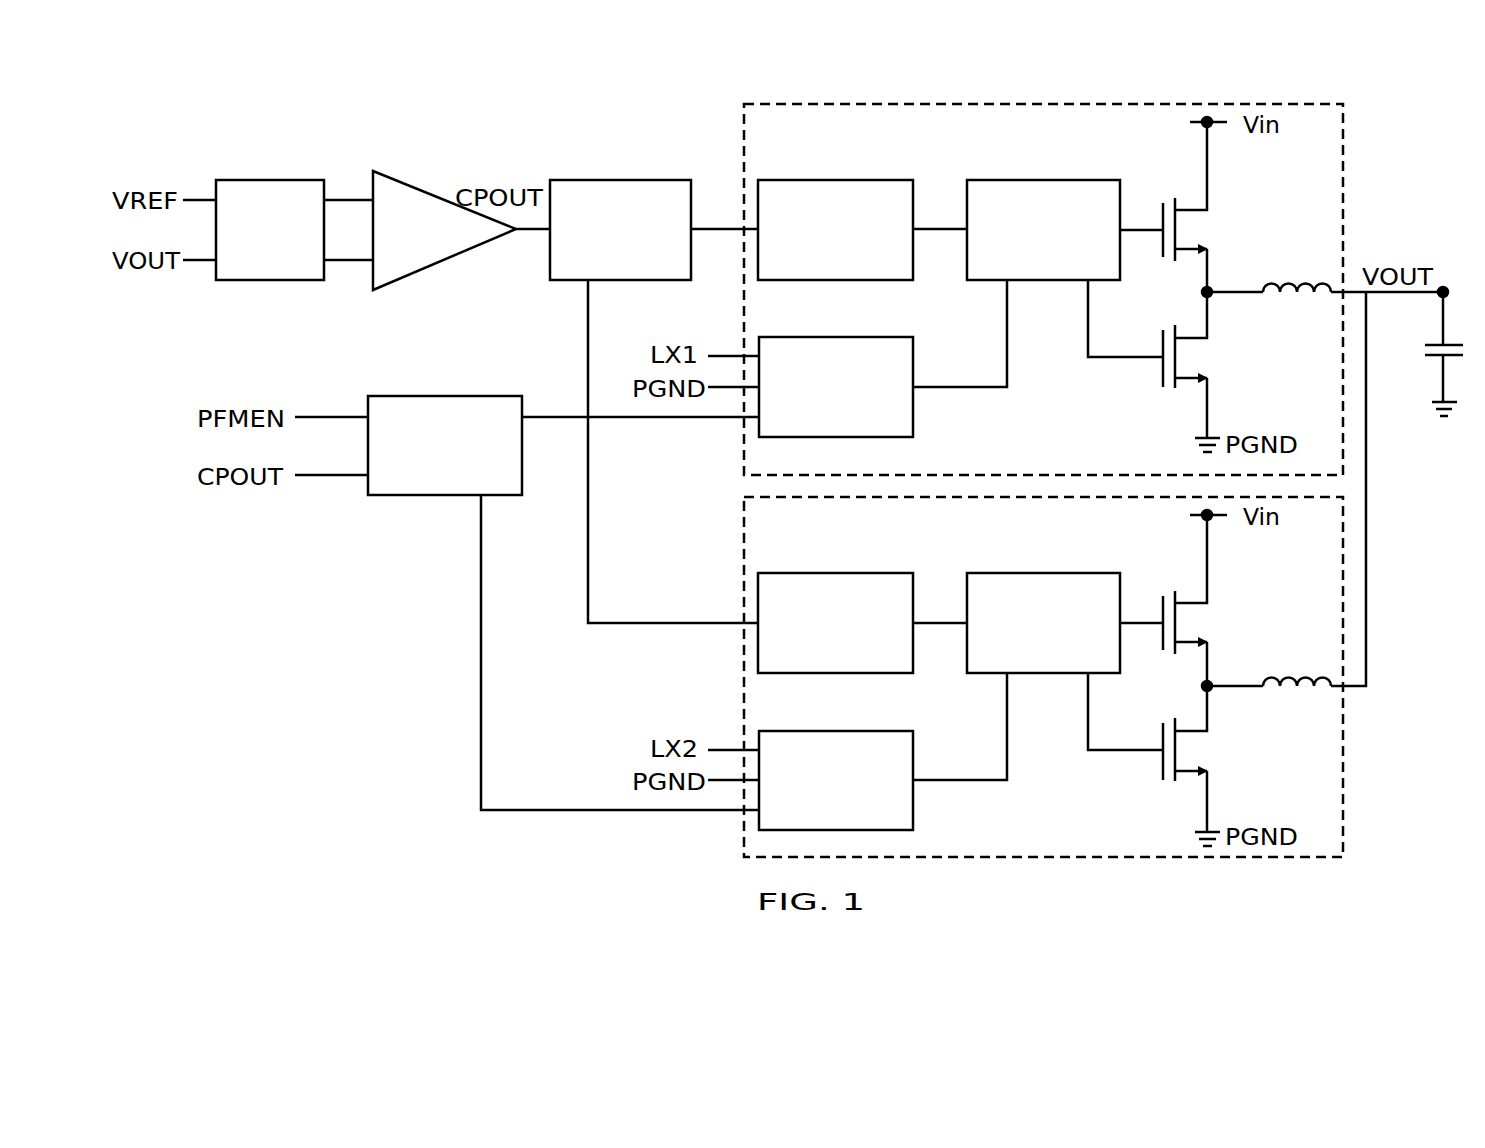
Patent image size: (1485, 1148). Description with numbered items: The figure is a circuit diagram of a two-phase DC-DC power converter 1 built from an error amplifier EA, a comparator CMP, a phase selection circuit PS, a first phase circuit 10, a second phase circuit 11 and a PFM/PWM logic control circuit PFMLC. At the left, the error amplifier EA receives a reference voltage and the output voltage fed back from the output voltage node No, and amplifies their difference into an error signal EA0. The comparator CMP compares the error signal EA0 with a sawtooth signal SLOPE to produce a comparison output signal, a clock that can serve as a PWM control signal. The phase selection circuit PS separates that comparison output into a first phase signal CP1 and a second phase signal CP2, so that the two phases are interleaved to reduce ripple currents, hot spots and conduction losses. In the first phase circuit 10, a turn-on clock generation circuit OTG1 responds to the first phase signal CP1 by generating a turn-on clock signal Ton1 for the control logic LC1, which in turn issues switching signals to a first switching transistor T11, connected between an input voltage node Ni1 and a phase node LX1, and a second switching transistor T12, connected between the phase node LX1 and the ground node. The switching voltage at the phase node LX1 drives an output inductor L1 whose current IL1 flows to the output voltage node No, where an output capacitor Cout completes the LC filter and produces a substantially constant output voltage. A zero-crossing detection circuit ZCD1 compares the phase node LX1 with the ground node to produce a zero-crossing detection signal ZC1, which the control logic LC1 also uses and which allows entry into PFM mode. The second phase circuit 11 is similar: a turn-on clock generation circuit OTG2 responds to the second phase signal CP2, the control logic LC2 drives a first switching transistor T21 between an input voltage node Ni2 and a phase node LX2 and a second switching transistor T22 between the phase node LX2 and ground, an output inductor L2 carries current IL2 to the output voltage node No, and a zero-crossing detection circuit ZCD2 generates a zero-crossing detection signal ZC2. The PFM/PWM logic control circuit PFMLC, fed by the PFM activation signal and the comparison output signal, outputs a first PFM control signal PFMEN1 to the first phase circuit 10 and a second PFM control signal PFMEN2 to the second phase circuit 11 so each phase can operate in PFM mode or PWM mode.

The multi-phase DC-DC power converter 1 is at (306, 637).
The first phase circuit 10 is at (1345, 143).
The second phase circuit 11 is at (1345, 538).
The error amplifier EA is at (269, 180).
The error signal EA0 is at (348, 200).
The sawtooth signal SLOPE is at (348, 260).
The comparator CMP is at (430, 194).
The phase selection circuit PS is at (620, 180).
The first phase signal CP1 is at (724, 213).
The second phase signal CP2 is at (673, 451).
The PFM/PWM logic control circuit PFMLC is at (445, 396).
The first PFM control signal PFMEN1 is at (640, 435).
The second PFM control signal PFMEN2 is at (620, 671).
The turn-on clock generation circuit OTG1 is at (835, 180).
The turn-on clock generation circuit OTG2 is at (835, 573).
The turn-on clock signal Ton1 is at (940, 229).
The control logic LC1 is at (1043, 180).
The control logic LC2 is at (1043, 573).
The zero-crossing detection circuit ZCD1 is at (913, 423).
The zero-crossing detection circuit ZCD2 is at (913, 816).
The zero-crossing detection signal ZC1 is at (960, 333).
The zero-crossing detection signal ZC2 is at (960, 726).
The first switching transistor T11 is at (1163, 207).
The second switching transistor T12 is at (1154, 366).
The first switching transistor T21 is at (1163, 600).
The second switching transistor T22 is at (1154, 759).
The input voltage node Ni1 is at (1210, 126).
The input voltage node Ni2 is at (1210, 519).
The phase node LX1 is at (1232, 282).
The phase node LX2 is at (1232, 675).
The output inductor L1 is at (1297, 269).
The output inductor L2 is at (1297, 663).
The first inductor current IL1 is at (1332, 309).
The second inductor current IL2 is at (1332, 702).
The output voltage node No is at (1443, 290).
The output capacitor Cout is at (1424, 354).